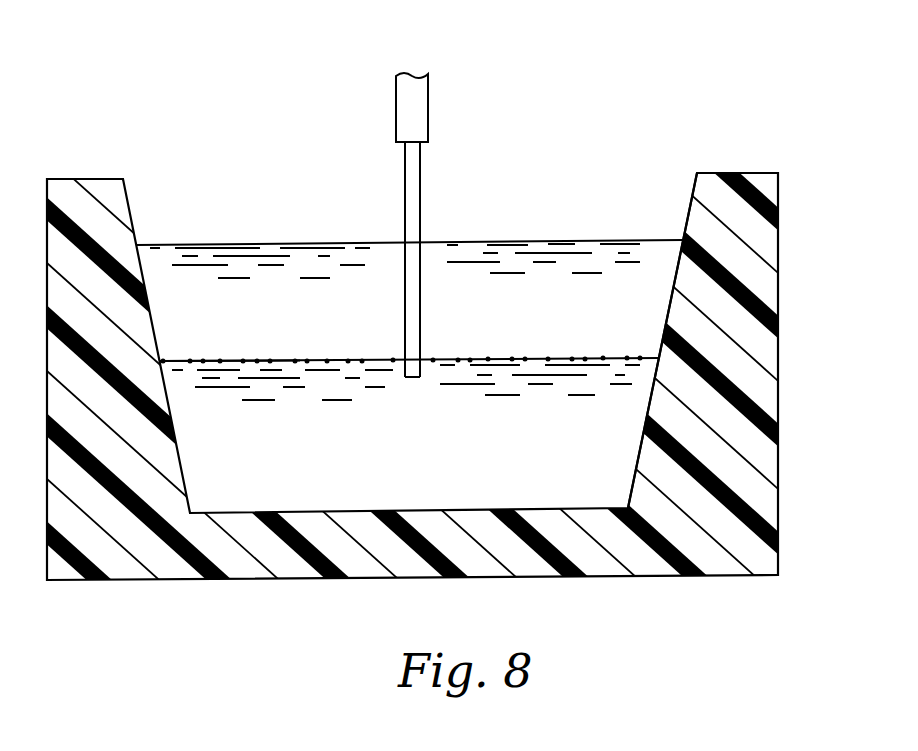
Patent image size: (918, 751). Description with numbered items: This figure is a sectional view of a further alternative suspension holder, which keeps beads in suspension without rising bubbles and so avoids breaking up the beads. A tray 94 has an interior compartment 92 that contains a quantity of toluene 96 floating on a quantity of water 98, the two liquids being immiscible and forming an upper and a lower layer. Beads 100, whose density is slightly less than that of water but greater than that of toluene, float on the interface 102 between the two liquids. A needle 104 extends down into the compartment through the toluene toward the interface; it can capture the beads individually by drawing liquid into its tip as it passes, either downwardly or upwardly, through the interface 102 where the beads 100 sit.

The interior compartment 92 is at (692, 190).
The tray 94 is at (778, 255).
The toluene 96 is at (558, 325).
The water 98 is at (533, 475).
The beads 100 is at (350, 361).
The interface 102 is at (285, 361).
The needle 104 is at (412, 193).